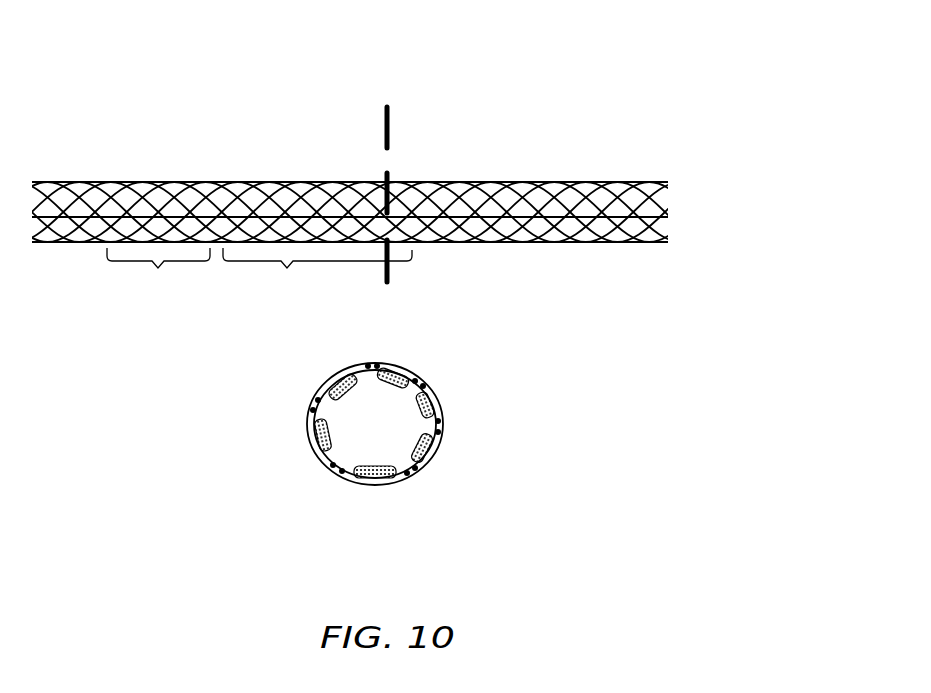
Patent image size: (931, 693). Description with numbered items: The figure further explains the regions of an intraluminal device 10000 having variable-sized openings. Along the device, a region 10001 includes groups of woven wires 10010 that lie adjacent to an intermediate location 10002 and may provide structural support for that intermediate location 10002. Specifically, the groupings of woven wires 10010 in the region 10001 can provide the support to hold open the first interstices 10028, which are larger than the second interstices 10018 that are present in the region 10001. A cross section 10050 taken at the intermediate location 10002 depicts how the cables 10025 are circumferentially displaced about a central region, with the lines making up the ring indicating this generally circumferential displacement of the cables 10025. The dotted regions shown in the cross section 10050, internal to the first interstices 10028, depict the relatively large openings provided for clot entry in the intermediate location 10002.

The device 10000 is at (561, 126).
The region 10001 is at (150, 269).
The intermediate location 10002 is at (265, 270).
The woven wires 10010 is at (122, 192).
The second interstices 10018 is at (153, 197).
The cables 10025 is at (371, 189).
The first interstices 10028 is at (374, 211).
The cross section 10050 is at (442, 86).